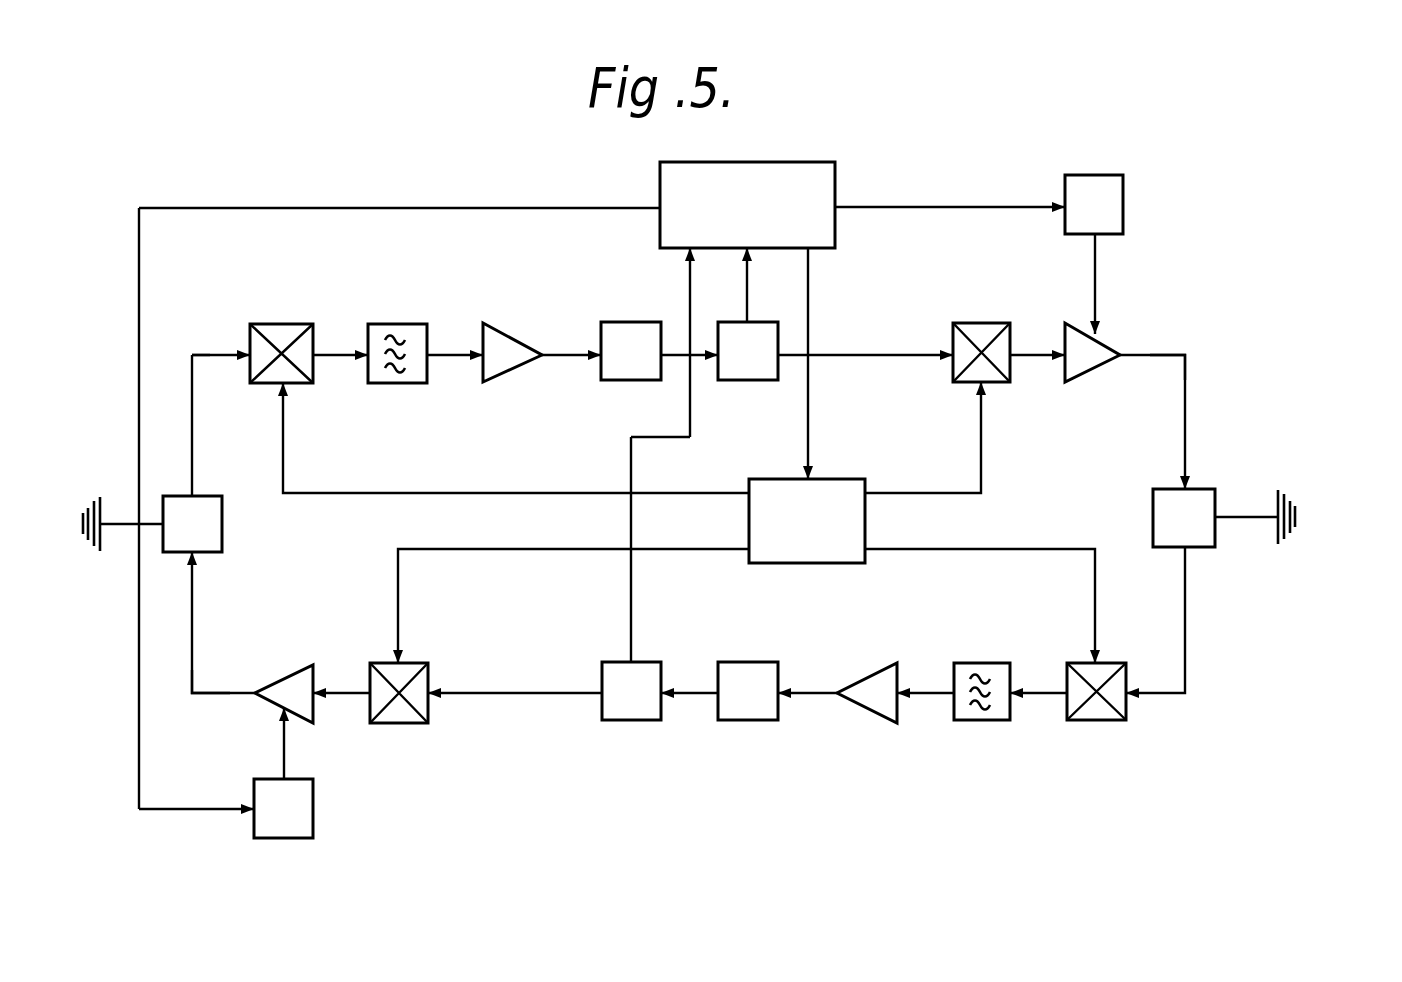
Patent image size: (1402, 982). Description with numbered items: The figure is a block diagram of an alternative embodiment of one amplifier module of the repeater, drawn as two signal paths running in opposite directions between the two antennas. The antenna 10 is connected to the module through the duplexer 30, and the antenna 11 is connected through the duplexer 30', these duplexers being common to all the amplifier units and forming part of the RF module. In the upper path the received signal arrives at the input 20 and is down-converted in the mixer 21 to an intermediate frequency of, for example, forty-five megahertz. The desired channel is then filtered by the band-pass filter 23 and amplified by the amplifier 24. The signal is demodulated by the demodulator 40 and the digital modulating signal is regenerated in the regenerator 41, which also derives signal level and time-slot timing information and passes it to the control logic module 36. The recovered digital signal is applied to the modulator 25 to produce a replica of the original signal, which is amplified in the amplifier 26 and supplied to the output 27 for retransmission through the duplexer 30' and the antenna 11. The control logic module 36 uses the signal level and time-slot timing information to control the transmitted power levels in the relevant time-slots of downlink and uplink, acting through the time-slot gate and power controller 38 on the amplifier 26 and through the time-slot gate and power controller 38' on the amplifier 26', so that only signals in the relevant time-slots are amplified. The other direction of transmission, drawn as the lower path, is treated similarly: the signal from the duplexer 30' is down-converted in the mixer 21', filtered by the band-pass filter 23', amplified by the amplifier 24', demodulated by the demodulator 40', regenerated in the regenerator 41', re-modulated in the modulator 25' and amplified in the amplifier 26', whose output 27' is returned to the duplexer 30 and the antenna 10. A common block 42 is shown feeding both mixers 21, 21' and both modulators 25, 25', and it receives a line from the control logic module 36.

The antenna 10 is at (92, 509).
The antenna 11 is at (1283, 498).
The input 20 is at (209, 354).
The mixer 21 is at (281, 334).
The band-pass filter 23 is at (397, 334).
The amplifier 24 is at (512, 333).
The modulator 25 is at (981, 333).
The amplifier 26 is at (1102, 363).
The output 27 is at (1186, 348).
The duplexer 30 is at (220, 524).
The duplexer 30' is at (1156, 518).
The control logic module 36 is at (756, 224).
The time-slot gate and power controller 38 is at (1094, 186).
The demodulator 40 is at (631, 332).
The regenerator 41 is at (740, 332).
The local oscillator 42 is at (818, 541).
The mixer 21' is at (1096, 718).
The band-pass filter 23' is at (982, 718).
The amplifier 24' is at (867, 719).
The modulator 25' is at (399, 718).
The amplifier 26' is at (284, 669).
The output signal path (return path) 27' is at (204, 704).
The time-slot gate and power controller 38' is at (311, 808).
The demodulator 40' is at (748, 717).
The regenerator 41' is at (631, 717).